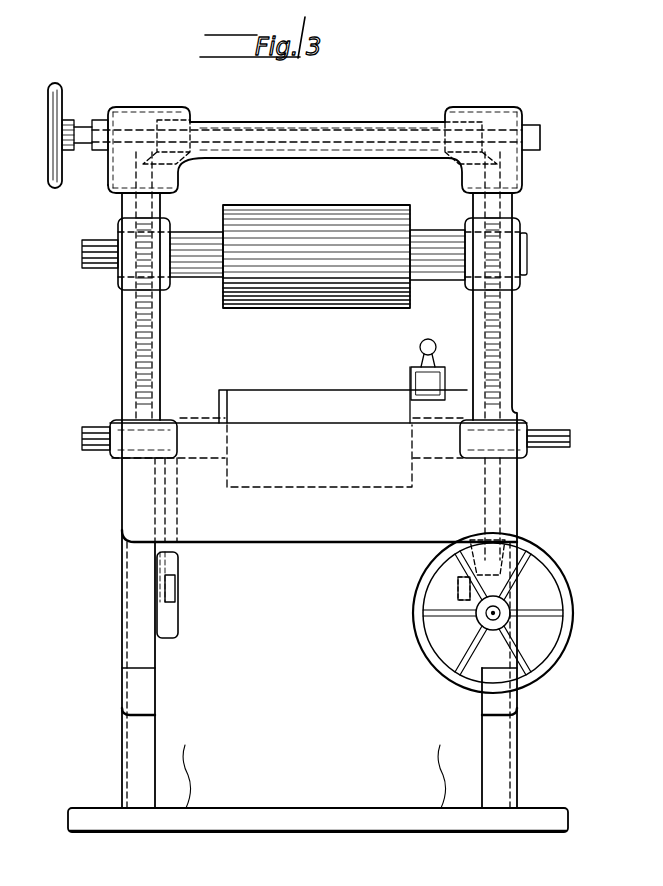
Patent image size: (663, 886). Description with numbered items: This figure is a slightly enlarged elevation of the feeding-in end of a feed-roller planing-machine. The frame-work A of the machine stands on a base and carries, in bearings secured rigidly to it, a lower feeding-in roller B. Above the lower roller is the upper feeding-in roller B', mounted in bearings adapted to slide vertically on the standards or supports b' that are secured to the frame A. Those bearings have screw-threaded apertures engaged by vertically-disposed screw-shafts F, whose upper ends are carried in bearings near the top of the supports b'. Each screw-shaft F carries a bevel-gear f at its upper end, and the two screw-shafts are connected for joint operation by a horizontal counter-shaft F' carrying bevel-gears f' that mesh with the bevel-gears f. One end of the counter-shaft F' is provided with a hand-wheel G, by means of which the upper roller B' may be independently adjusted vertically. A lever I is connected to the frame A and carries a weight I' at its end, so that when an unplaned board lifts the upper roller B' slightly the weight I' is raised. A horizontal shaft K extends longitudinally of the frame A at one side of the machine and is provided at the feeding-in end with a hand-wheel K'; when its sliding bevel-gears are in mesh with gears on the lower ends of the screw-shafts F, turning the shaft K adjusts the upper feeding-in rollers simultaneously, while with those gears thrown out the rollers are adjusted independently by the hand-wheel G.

The frame-work A is at (152, 735).
The lower feeding-in roller B is at (326, 449).
The upper feeding-in roller B' is at (317, 271).
The screw-shaft F is at (306, 500).
The counter-shaft F' is at (307, 126).
The bevel-gear f is at (307, 158).
The bevel-gear f' is at (320, 125).
The support b' is at (318, 286).
The hand-wheel G is at (62, 105).
The lever I is at (317, 596).
The weight I' is at (331, 589).
The horizontal shaft K is at (479, 613).
The hand-wheel K' is at (425, 620).